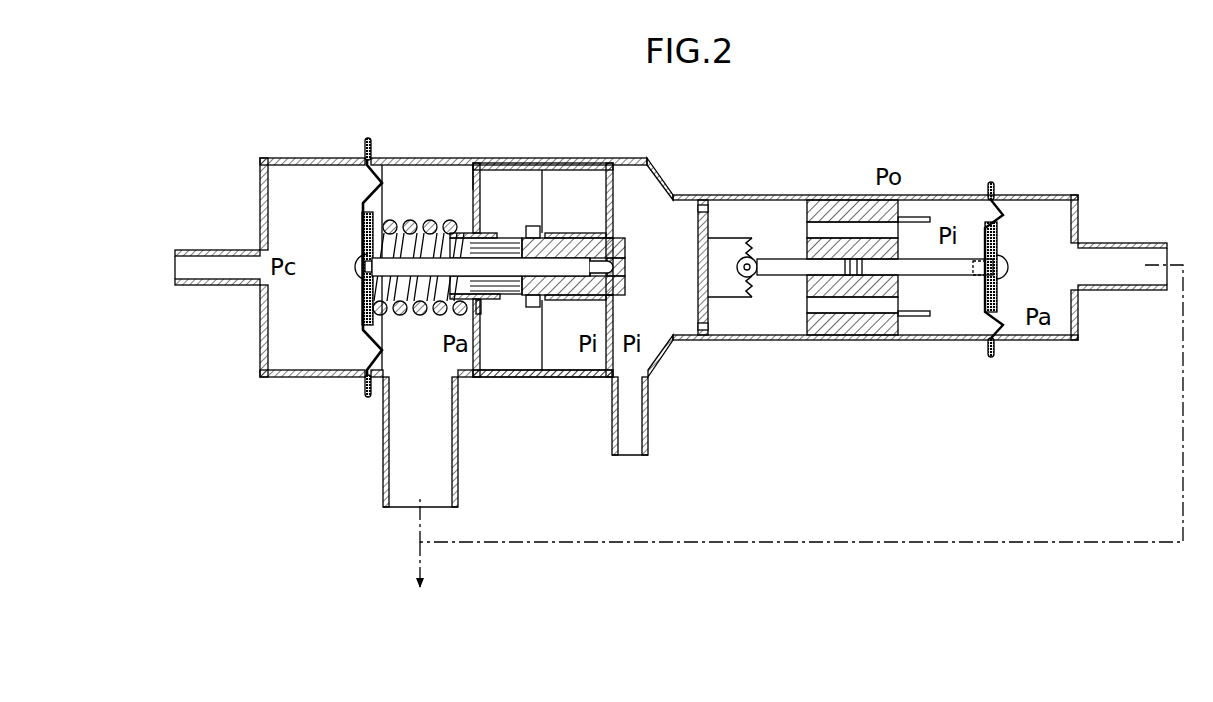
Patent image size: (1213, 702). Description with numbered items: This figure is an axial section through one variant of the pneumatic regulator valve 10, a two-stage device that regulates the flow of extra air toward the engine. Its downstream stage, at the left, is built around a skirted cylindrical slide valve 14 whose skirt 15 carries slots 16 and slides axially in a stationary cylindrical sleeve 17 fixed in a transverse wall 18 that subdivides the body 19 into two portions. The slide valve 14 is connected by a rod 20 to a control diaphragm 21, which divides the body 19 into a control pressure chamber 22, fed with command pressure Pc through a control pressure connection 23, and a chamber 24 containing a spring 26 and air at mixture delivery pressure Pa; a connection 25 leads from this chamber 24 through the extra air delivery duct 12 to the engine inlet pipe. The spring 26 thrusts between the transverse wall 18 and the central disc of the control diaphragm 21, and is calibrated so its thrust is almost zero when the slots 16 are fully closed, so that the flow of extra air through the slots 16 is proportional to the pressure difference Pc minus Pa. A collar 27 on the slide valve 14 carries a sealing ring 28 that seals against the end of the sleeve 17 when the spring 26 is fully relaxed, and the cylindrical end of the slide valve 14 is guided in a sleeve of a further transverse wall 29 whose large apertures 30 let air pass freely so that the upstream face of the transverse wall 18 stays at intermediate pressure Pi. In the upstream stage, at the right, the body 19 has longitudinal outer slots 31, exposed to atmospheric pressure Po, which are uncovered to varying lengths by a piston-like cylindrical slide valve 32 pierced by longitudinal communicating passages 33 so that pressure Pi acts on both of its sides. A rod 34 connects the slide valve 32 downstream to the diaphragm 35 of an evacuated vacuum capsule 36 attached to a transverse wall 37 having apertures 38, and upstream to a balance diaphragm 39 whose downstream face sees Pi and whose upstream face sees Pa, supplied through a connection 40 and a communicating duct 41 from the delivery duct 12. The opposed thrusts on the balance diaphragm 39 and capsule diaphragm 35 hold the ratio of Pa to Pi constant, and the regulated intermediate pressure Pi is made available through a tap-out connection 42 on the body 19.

The pneumatic regulator valve 10 is at (626, 150).
The extra air delivery duct 12 is at (433, 564).
The skirted cylindrical slide valve 14 is at (549, 300).
The skirt 15 is at (481, 304).
The slots 16 is at (520, 311).
The stationary cylindrical sleeve 17 is at (486, 233).
The transverse wall 18 is at (473, 190).
The body 19 is at (446, 158).
The rod 20 is at (362, 292).
The control diaphragm 21 is at (360, 212).
The control pressure chamber 22 is at (268, 335).
The control pressure connection 23 is at (214, 252).
The chamber 24 is at (402, 166).
The connection 25 is at (458, 442).
The spring 26 is at (416, 222).
The collar 27 is at (547, 233).
The sealing ring 28 is at (526, 234).
The further transverse wall 29 is at (613, 229).
The apertures 30 is at (613, 200).
The longitudinal outer slots 31 is at (917, 196).
The cylindrical slide valve 32 is at (893, 328).
The longitudinal communicating passages 33 is at (835, 213).
The rod 34 is at (948, 276).
The diaphragm 35 is at (755, 252).
The vacuum capsule 36 is at (736, 300).
The transverse wall 37 is at (698, 265).
The apertures 38 is at (712, 211).
The balance diaphragm 39 is at (1003, 212).
The connection 40 is at (1113, 245).
The communicating duct 41 is at (888, 542).
The tap-out connection 42 is at (648, 418).